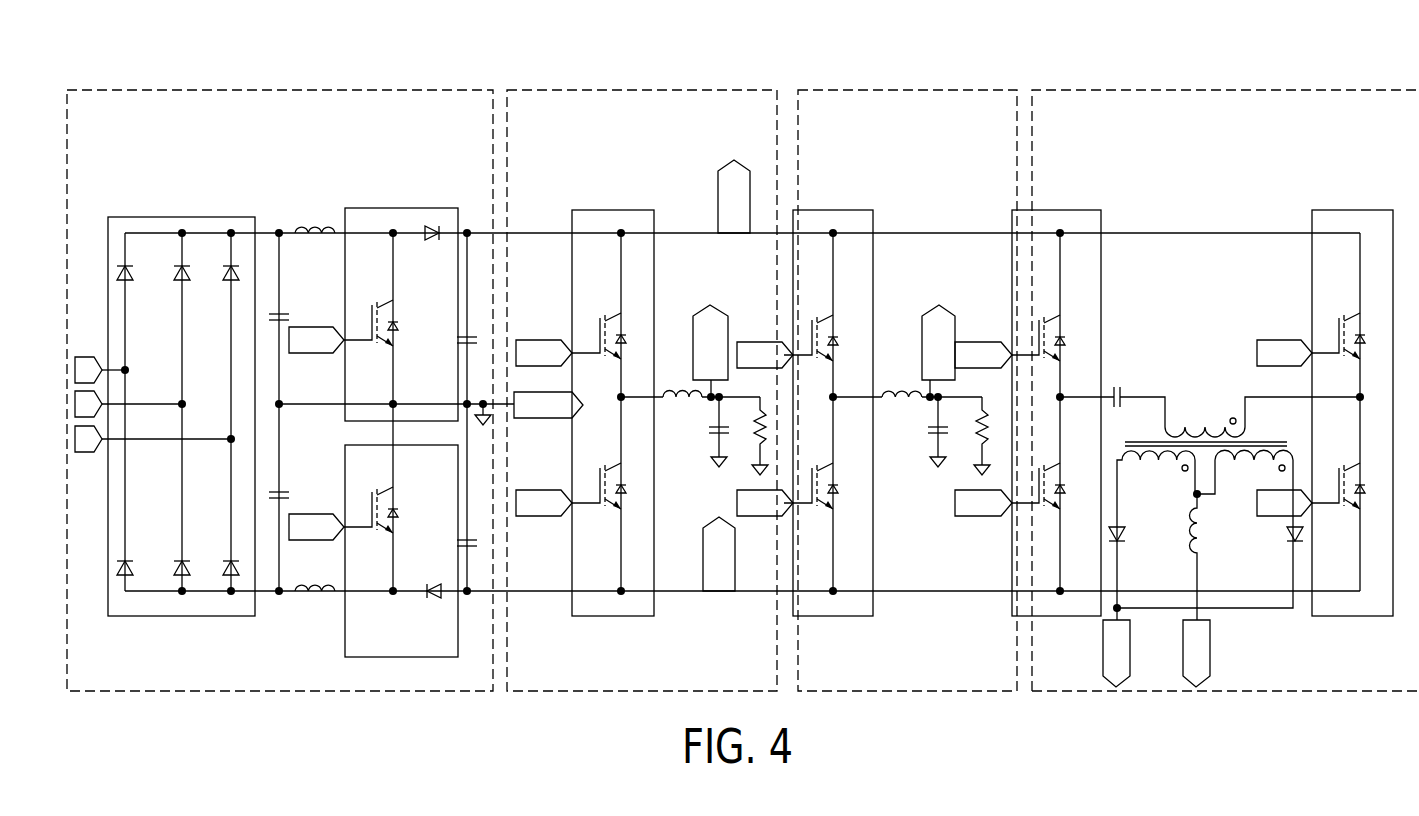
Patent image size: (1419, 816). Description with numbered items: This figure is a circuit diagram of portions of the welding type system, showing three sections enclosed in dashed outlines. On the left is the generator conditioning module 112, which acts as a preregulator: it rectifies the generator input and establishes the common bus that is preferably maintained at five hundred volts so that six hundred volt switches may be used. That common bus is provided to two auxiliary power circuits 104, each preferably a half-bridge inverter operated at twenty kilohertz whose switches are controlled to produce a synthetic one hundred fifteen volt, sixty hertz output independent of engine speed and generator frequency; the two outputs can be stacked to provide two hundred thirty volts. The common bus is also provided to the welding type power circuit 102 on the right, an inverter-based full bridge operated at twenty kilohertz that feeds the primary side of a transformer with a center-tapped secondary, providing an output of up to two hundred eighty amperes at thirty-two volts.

The generator conditioning module 112 is at (281, 90).
The auxiliary power circuit 104 is at (643, 90).
The welding type power circuit 102 is at (1235, 90).